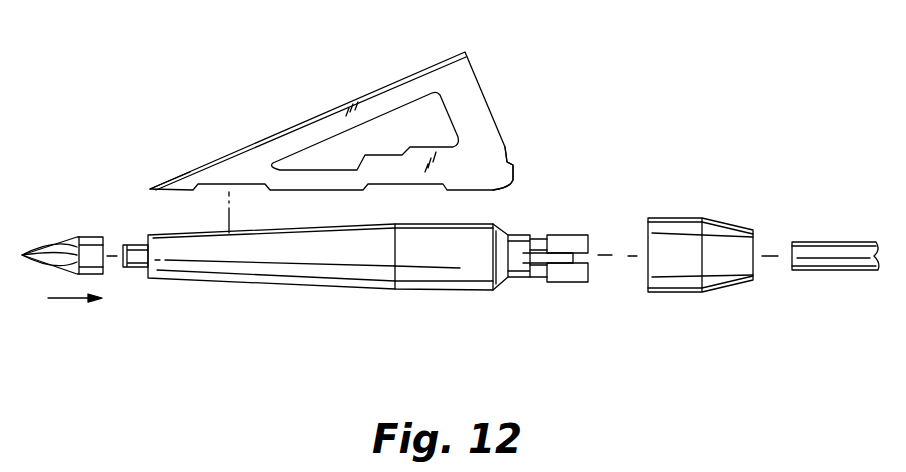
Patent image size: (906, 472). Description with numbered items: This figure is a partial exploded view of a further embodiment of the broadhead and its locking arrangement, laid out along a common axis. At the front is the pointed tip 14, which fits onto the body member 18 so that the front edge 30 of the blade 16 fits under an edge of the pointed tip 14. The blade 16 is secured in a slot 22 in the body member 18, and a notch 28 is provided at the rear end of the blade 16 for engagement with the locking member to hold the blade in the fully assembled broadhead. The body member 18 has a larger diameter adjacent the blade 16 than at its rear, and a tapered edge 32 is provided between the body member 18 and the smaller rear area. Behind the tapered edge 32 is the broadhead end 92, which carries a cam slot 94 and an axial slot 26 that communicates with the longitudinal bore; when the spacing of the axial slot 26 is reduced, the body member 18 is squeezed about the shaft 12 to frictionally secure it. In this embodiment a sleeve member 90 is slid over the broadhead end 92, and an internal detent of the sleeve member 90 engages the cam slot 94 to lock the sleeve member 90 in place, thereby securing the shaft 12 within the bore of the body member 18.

The shaft 12 is at (813, 242).
The pointed tip 14 is at (80, 237).
The blade 16 is at (383, 97).
The body member 18 is at (253, 290).
The slot 22 is at (435, 286).
The axial slot 26 is at (572, 283).
The notch 28 is at (507, 167).
The front edge 30 is at (153, 187).
The tapered edge 32 is at (505, 223).
The sleeve member 90 is at (697, 217).
The broadhead end 92 is at (570, 235).
The cam slot 94 is at (535, 283).